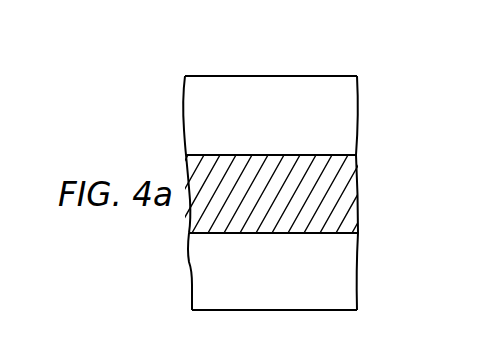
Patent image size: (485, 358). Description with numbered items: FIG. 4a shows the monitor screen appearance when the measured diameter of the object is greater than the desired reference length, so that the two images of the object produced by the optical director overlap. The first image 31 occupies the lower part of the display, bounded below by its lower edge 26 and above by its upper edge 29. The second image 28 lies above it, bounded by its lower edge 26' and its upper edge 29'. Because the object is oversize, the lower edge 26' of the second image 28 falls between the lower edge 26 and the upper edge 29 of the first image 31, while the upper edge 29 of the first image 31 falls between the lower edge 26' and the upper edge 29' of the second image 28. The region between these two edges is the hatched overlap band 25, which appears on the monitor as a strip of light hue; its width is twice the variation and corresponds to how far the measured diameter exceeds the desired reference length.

The second image 28 is at (275, 122).
The overlap band 25 is at (340, 187).
The first image 31 is at (268, 273).
The upper edge of the second image 29' is at (277, 56).
The upper edge of the first image 29 is at (290, 132).
The lower edge of the second image 26' is at (294, 254).
The lower edge of the first image 26 is at (275, 325).